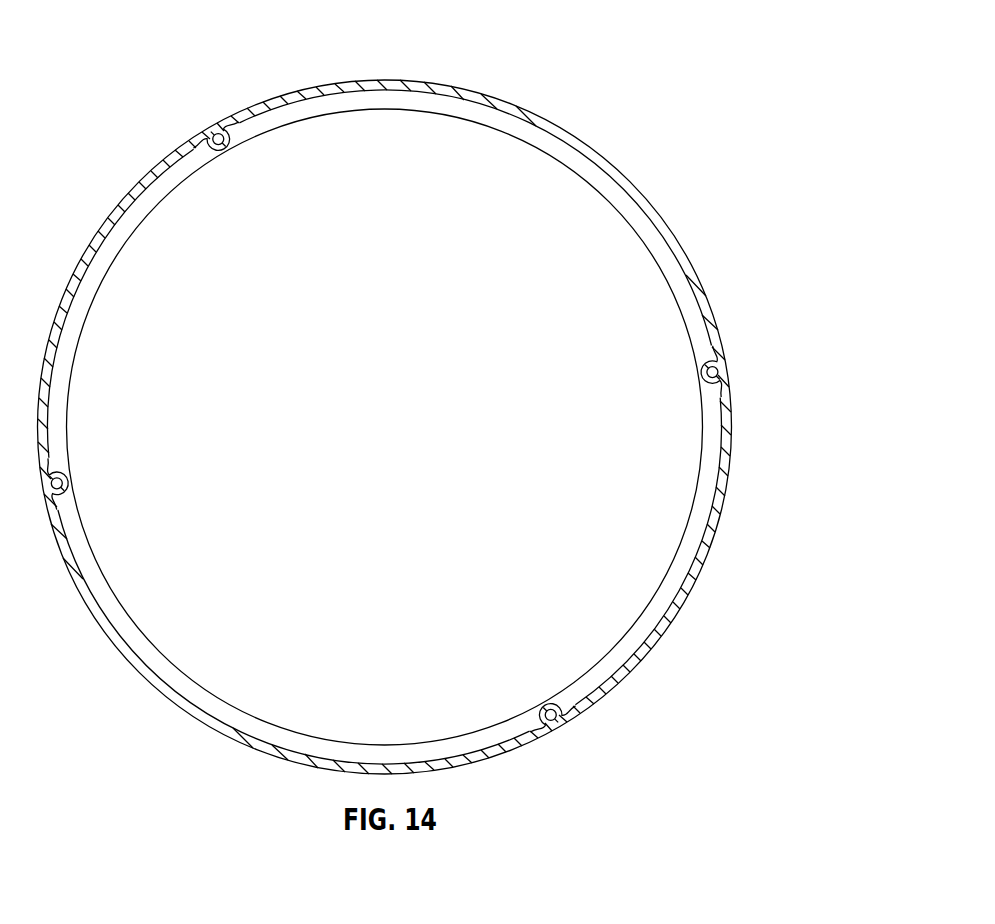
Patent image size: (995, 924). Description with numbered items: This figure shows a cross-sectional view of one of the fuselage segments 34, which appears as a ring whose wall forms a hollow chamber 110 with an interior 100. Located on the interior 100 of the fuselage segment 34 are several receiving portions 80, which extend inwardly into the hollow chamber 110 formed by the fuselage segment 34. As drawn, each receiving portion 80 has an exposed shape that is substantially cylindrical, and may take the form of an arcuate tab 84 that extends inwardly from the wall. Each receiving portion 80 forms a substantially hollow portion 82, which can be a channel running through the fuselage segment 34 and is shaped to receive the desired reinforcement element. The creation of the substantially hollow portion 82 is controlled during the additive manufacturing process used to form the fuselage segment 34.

The hollow chamber 110 is at (442, 184).
The interior 100 is at (517, 149).
The fuselage segment 34 is at (627, 181).
The receiving portion 80 is at (722, 355).
The substantially hollow portion 82 is at (718, 372).
The tab 84 is at (727, 403).